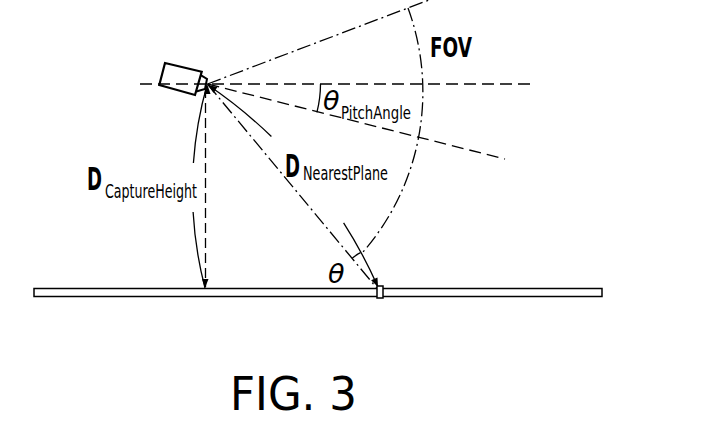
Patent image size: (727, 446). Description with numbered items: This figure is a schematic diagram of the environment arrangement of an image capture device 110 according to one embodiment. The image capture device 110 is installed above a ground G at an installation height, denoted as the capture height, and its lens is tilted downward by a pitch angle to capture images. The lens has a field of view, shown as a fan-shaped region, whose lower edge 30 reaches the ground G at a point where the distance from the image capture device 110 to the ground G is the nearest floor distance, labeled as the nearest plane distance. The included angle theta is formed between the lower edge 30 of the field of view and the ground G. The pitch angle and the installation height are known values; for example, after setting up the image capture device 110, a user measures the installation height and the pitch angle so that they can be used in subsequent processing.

The image capture device 110 is at (177, 62).
The lower edge of the field of view 30 is at (383, 296).
The ground G is at (330, 295).